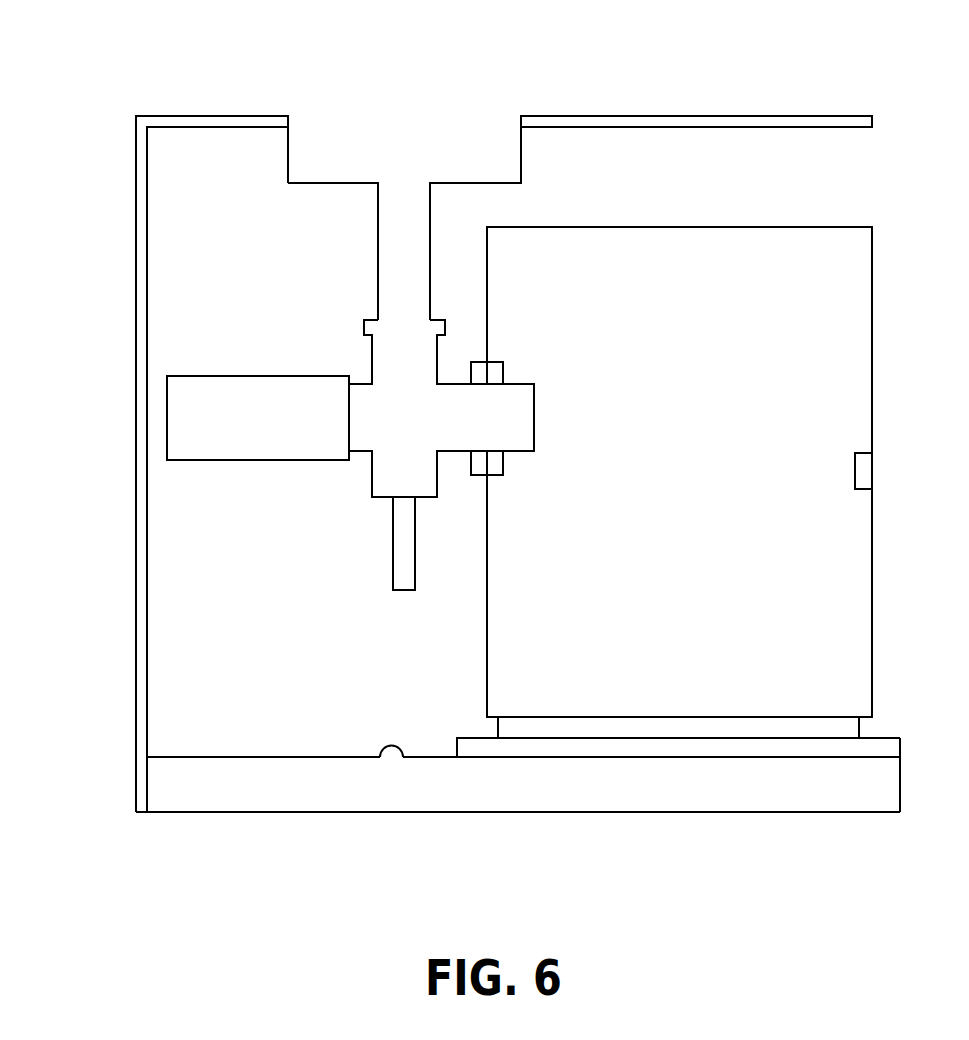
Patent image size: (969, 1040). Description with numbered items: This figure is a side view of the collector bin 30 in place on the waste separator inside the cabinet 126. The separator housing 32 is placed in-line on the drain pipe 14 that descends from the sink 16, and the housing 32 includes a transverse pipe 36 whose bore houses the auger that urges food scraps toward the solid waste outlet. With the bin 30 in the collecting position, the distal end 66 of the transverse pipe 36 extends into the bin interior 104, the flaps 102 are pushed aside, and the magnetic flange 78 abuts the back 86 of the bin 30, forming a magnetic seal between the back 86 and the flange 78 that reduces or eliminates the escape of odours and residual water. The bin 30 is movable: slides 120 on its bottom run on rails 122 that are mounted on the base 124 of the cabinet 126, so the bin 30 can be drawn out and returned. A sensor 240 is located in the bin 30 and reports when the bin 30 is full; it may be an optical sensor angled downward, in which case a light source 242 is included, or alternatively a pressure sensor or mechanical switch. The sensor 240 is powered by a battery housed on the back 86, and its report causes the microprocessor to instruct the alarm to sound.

The drain pipe 14 is at (397, 231).
The sink 16 is at (403, 137).
The bin 30 is at (848, 267).
The housing 32 is at (192, 352).
The transverse pipe 36 is at (452, 397).
The distal end of the transverse pipe 66 is at (535, 417).
The magnetic flange 78 is at (478, 465).
The back 86 is at (488, 613).
The flaps 102 is at (493, 372).
The bin interior 104 is at (835, 542).
The slides 120 is at (817, 727).
The rails 122 is at (639, 738).
The base 124 is at (388, 738).
The cabinet 126 is at (147, 658).
The sensor 240 is at (872, 470).
The light source 242 is at (493, 466).